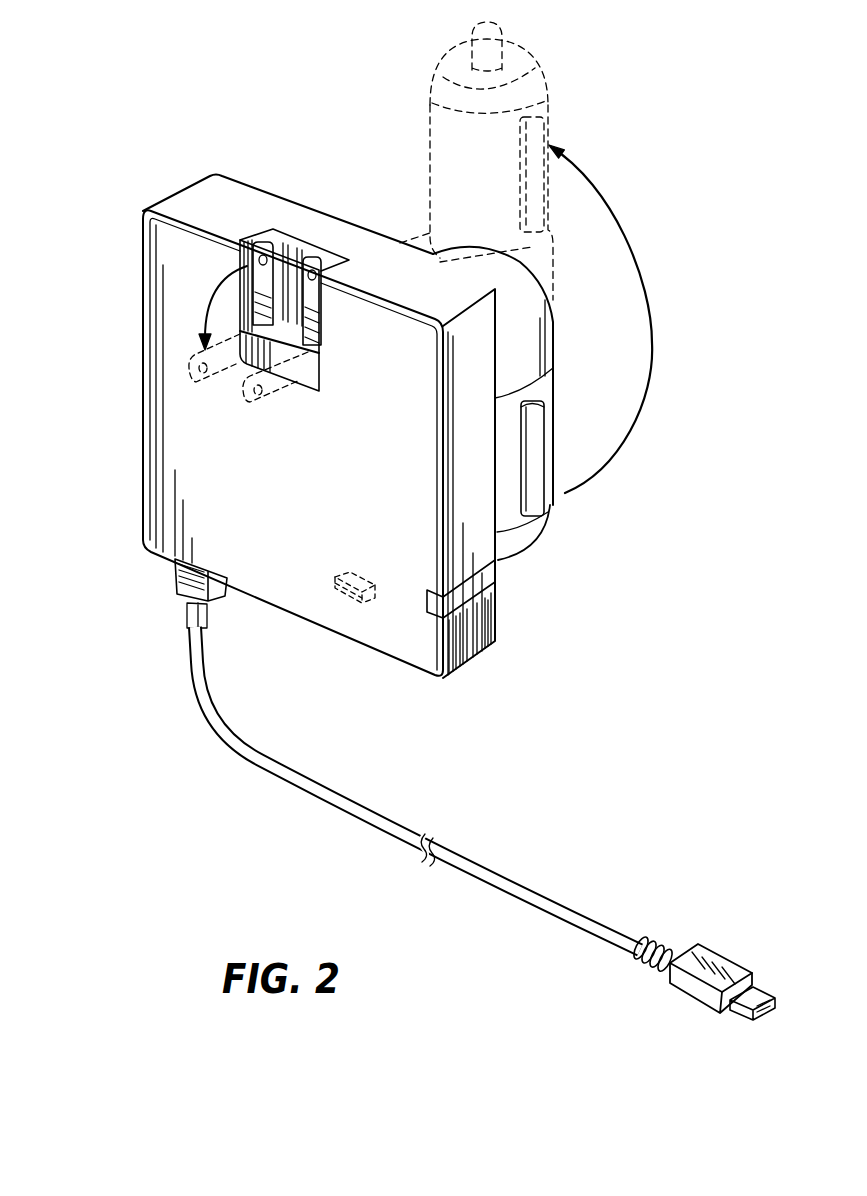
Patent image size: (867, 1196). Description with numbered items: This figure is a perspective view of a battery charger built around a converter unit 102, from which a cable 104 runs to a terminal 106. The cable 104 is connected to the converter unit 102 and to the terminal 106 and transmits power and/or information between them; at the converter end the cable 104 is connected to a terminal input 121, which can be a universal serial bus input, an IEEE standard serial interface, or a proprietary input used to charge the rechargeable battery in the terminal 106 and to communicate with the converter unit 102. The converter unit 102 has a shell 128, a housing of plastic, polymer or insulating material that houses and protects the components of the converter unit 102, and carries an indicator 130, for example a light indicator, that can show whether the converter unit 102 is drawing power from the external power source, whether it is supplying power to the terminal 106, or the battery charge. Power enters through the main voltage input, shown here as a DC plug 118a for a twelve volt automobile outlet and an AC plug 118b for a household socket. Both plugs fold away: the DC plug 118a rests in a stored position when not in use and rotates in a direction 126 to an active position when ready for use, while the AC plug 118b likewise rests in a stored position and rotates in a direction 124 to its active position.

The converter unit 102 is at (432, 676).
The cable 104 is at (546, 898).
The terminal 106 is at (713, 947).
The DC plug 118a is at (545, 128).
The AC plug 118b is at (250, 238).
The terminal input 121 is at (352, 596).
The direction 124 is at (207, 301).
The direction 126 is at (652, 340).
The shell 128 is at (172, 413).
The indicator 130 is at (467, 588).